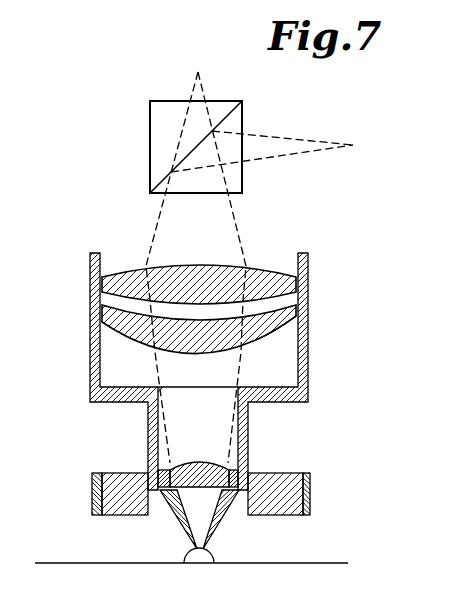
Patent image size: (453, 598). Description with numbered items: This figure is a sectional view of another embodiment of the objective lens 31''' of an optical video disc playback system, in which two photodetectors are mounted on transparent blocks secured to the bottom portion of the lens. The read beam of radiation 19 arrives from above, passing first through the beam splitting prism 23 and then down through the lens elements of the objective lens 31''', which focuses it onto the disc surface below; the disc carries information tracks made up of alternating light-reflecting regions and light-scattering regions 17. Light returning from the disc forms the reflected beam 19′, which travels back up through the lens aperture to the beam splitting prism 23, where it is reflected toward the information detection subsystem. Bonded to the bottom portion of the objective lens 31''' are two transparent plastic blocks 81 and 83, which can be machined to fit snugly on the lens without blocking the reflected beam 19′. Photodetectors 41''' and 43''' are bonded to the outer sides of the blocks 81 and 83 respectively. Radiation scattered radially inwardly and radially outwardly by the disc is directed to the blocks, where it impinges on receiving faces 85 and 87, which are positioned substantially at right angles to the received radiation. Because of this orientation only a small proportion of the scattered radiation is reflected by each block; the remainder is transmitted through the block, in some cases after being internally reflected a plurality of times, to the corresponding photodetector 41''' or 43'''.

The light-scattering regions 17 is at (190, 557).
The read beam of radiation 19 is at (195, 90).
The reflected beam 19′ is at (343, 102).
The beam splitting prism 23 is at (155, 131).
The objective lens 31''' is at (248, 371).
The photodetector 41''' is at (62, 497).
The photodetector 43''' is at (341, 493).
The transparent plastic block 81 is at (133, 447).
The transparent plastic block 83 is at (270, 472).
The receiving face 85 is at (165, 490).
The receiving face 87 is at (233, 497).